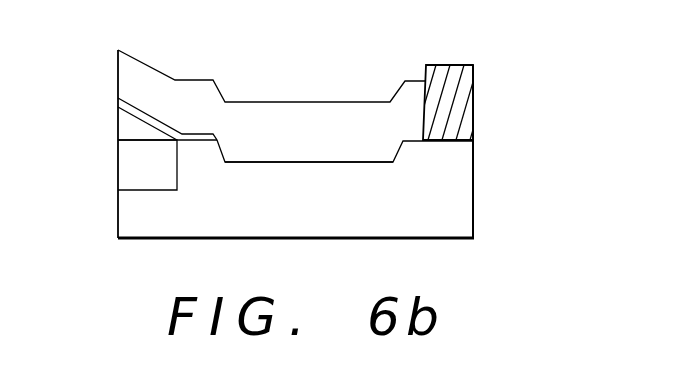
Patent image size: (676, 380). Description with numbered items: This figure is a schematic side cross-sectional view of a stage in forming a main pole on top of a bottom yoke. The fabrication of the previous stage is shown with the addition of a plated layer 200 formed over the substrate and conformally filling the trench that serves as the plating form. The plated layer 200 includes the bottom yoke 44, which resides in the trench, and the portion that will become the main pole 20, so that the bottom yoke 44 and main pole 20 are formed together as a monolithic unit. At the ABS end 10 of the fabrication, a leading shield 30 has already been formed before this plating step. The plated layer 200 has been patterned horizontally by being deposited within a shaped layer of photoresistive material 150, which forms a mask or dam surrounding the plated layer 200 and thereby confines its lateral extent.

The ABS end 10 is at (111, 210).
The plated layer 200 is at (247, 117).
The main pole 20 is at (372, 117).
The bottom yoke 44 is at (247, 145).
The leading shield 30 is at (136, 156).
The photoresistive material 150 is at (474, 104).